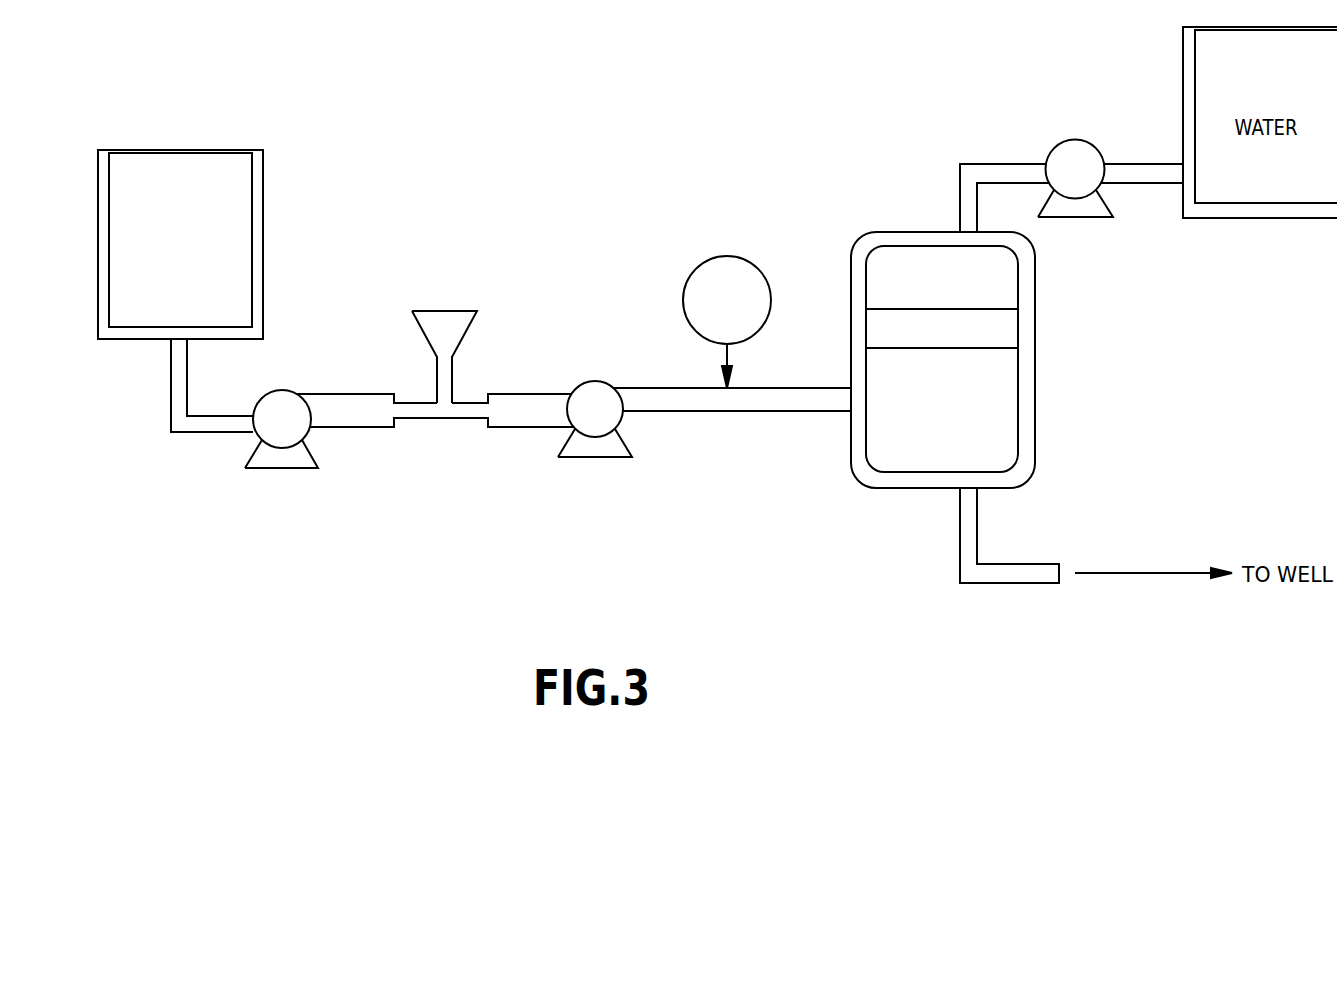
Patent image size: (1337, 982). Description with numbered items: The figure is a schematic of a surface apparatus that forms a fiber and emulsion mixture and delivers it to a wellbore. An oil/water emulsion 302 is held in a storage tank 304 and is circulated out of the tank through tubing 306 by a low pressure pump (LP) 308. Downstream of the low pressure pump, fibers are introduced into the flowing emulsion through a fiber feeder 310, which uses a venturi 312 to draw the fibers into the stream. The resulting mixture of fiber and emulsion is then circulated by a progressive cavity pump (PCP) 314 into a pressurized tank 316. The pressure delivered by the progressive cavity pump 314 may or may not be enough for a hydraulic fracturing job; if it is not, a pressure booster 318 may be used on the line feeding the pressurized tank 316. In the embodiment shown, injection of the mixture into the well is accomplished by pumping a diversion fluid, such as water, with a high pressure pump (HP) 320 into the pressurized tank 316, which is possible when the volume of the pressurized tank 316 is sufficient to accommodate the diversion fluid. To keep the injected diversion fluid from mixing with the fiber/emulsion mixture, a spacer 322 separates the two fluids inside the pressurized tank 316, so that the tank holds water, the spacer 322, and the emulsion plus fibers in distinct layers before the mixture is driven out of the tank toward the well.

The oil/water emulsion 302 is at (160, 166).
The storage tank 304 is at (256, 232).
The tubing 306 is at (171, 410).
The low pressure pump 308 is at (282, 440).
The fiber feeder 310 is at (455, 320).
The venturi 312 is at (458, 412).
The progressive cavity pump 314 is at (592, 434).
The pressurized tank 316 is at (899, 480).
The pressure booster 318 is at (694, 288).
The high pressure pump 320 is at (1068, 147).
The spacer 322 is at (1005, 334).